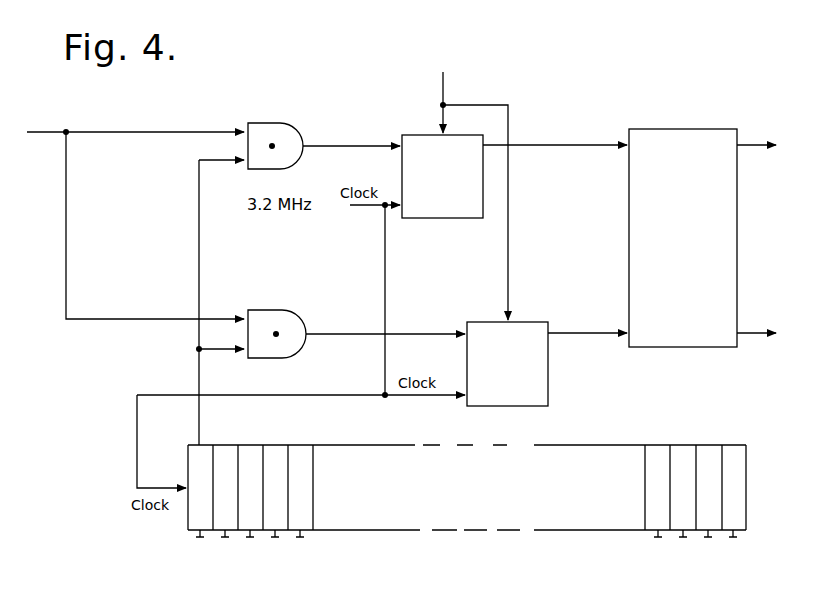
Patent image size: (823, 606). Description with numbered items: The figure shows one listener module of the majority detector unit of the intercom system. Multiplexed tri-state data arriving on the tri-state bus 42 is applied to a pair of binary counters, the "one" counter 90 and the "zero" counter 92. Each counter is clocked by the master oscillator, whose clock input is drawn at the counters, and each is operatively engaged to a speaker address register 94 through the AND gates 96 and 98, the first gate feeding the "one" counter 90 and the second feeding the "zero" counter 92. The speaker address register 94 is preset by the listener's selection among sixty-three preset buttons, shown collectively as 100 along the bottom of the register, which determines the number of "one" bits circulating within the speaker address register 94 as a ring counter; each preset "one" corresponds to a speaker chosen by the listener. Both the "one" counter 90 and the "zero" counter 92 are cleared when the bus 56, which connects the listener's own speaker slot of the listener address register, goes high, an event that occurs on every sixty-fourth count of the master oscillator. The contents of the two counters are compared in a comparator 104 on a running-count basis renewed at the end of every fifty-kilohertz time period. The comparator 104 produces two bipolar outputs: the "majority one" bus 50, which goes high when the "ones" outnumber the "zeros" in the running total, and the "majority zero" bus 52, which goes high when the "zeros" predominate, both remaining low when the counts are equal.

The tri-state bus 42 is at (38, 132).
The majority one bus 50 is at (757, 146).
The majority zero bus 52 is at (757, 332).
The bus 56 is at (443, 97).
The one counter 90 is at (483, 218).
The zero counter 92 is at (548, 406).
The speaker address register 94 is at (746, 445).
The AND gate 96 is at (296, 128).
The AND gate 98 is at (299, 314).
The preset buttons 100 is at (275, 538).
The comparator 104 is at (737, 129).